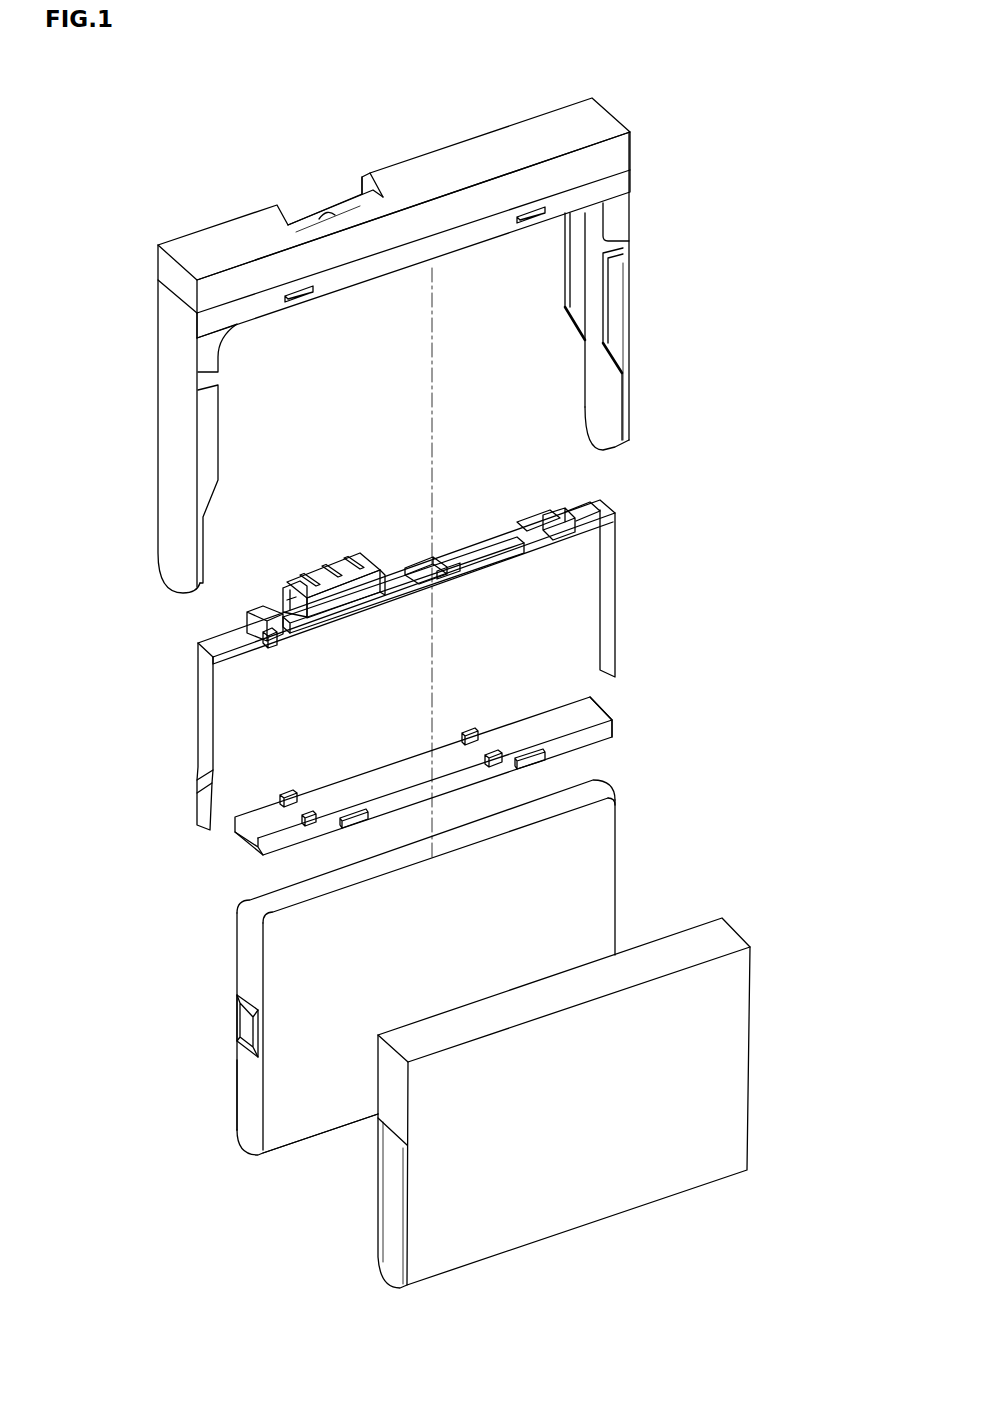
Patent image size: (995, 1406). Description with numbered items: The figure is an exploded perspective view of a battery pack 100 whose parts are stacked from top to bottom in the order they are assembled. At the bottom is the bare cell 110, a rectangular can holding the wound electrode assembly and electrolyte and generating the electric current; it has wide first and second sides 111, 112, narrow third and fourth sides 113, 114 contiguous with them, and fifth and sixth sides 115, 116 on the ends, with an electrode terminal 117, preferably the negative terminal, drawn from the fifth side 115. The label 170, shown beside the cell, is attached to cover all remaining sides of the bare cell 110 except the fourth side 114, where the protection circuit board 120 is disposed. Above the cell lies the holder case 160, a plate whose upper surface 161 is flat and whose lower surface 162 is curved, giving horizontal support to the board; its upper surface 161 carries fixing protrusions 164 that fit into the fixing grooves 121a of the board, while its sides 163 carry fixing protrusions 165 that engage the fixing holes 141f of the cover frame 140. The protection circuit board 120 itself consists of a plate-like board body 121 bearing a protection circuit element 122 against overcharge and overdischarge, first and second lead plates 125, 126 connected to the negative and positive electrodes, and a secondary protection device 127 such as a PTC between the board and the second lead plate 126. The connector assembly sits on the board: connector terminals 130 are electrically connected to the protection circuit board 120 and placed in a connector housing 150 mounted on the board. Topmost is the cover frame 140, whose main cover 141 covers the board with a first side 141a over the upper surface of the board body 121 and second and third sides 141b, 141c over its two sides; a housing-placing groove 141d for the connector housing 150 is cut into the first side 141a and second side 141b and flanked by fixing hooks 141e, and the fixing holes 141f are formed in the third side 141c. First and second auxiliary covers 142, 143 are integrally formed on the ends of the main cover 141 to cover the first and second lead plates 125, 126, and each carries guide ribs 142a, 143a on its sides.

The battery pack 100 is at (64, 101).
The bare cell 110 is at (227, 920).
The first side 111 is at (310, 1130).
The second side 112 is at (237, 973).
The third side 113 is at (273, 1155).
The fourth side 114 is at (268, 898).
The fifth side 115 is at (243, 1070).
The sixth side 116 is at (620, 870).
The electrode terminal 117 is at (240, 1023).
The protection circuit board 120 is at (195, 645).
The board body 121 is at (404, 587).
The fixing grooves 121a is at (453, 582).
The protection circuit element 122 is at (417, 567).
The first lead plate 125 is at (202, 727).
The second lead plate 126 is at (607, 605).
The secondary protection device 127 is at (552, 513).
The connector terminals 130 is at (328, 563).
The cover frame 140 is at (145, 272).
The main cover 141 is at (215, 220).
The first side of main cover 141a is at (468, 150).
The second side of main cover 141b is at (315, 205).
The third side of main cover 141c is at (445, 253).
The housing-placing groove 141d is at (327, 217).
The fixing hooks 141e is at (370, 178).
The fixing holes 141f is at (530, 222).
The first auxiliary cover 142 is at (155, 385).
The guide ribs 142a is at (215, 433).
The second auxiliary cover 143 is at (637, 280).
The guide ribs 143a is at (613, 342).
The connector housing 150 is at (330, 613).
The holder case 160 is at (620, 712).
The upper surface of holder case 161 is at (407, 773).
The lower surface of holder case 162 is at (257, 843).
The sides of holder case 163 is at (610, 737).
The fixing protrusions 164 is at (497, 750).
The fixing protrusions 165 is at (537, 750).
The label 170 is at (760, 1069).